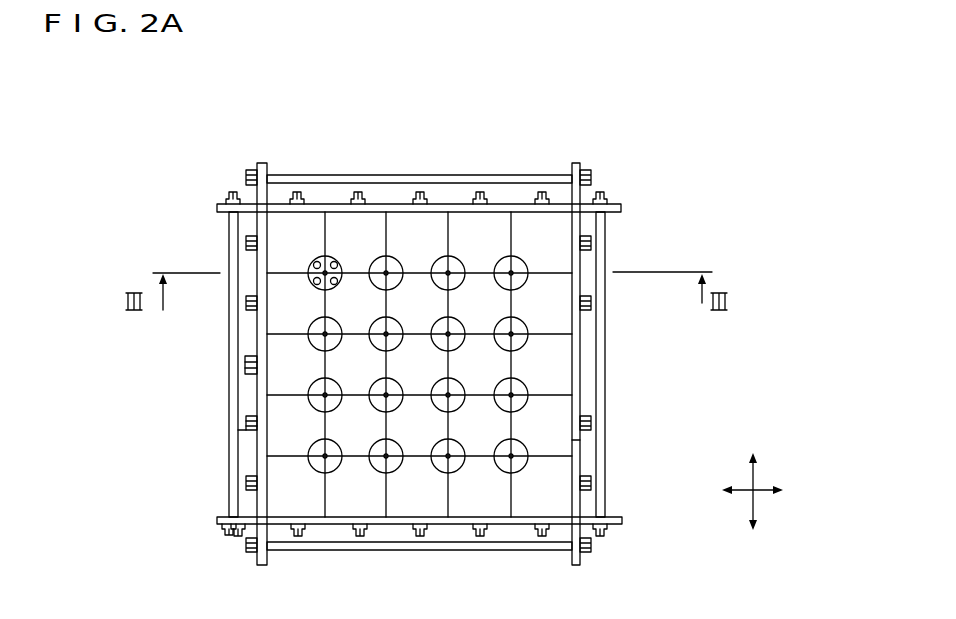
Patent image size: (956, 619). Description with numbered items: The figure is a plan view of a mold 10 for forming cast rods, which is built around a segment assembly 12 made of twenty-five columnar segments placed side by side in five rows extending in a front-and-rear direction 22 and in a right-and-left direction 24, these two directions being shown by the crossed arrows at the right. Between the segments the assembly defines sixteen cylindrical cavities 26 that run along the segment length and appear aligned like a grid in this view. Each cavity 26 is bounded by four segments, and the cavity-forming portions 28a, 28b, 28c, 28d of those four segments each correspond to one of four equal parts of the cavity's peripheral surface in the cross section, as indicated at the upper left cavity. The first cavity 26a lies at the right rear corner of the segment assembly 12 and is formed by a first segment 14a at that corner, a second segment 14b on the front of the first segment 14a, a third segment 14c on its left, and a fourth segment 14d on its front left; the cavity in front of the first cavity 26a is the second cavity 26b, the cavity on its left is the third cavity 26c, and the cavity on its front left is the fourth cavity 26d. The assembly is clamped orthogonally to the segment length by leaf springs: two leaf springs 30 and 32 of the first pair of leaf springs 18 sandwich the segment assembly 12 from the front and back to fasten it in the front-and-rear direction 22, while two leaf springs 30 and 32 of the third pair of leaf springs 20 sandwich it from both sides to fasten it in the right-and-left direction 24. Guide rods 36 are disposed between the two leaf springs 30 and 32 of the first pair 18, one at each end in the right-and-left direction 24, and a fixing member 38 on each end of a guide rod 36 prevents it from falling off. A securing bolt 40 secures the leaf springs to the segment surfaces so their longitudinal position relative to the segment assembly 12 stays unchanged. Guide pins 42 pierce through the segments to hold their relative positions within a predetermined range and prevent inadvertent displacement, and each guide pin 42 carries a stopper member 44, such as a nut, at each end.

The mold for forming cast rods 10 is at (619, 146).
The segment assembly 12 is at (577, 448).
The first segment 14a is at (555, 227).
The second segment 14b is at (547, 282).
The third segment 14c is at (490, 227).
The fourth segment 14d is at (488, 305).
The first pair of leaf springs 18 is at (416, 364).
The third pair of leaf springs 20 is at (418, 361).
The front-and-rear direction 22 is at (755, 475).
The right-and-left direction 24 is at (762, 486).
The cavity 26 is at (319, 287).
The first cavity 26a is at (518, 260).
The second cavity 26b is at (518, 324).
The third cavity 26c is at (456, 260).
The fourth cavity 26d is at (456, 342).
The cavity-forming portion 28a is at (318, 290).
The cavity-forming portion 28b is at (320, 258).
The cavity-forming portion 28c is at (337, 262).
The cavity-forming portion 28d is at (344, 290).
The leaf spring 30 is at (622, 518).
The leaf spring 32 is at (621, 208).
The guide rod 36 is at (410, 175).
The fixing member 38 is at (248, 552).
The securing bolt 40 is at (247, 366).
The guide pin 42 is at (245, 423).
The stopper member 44 is at (257, 433).